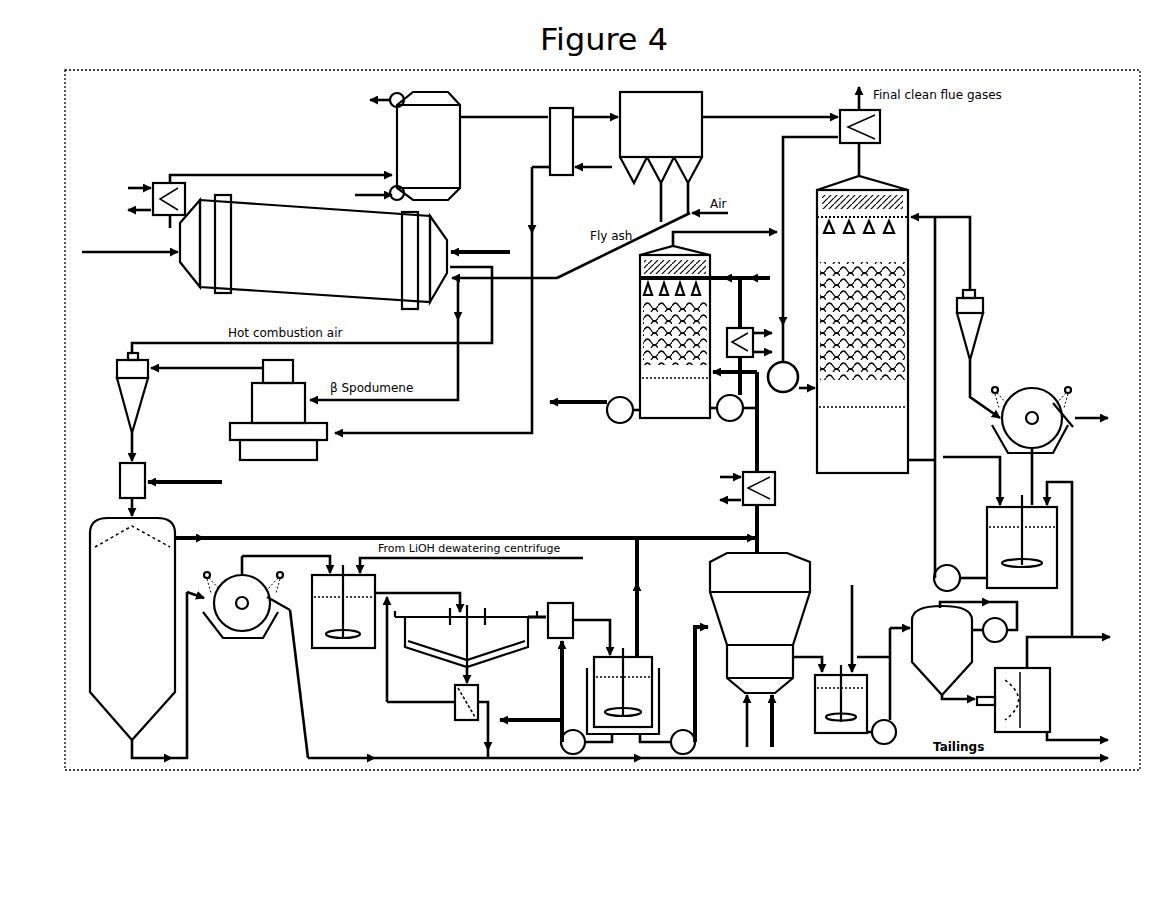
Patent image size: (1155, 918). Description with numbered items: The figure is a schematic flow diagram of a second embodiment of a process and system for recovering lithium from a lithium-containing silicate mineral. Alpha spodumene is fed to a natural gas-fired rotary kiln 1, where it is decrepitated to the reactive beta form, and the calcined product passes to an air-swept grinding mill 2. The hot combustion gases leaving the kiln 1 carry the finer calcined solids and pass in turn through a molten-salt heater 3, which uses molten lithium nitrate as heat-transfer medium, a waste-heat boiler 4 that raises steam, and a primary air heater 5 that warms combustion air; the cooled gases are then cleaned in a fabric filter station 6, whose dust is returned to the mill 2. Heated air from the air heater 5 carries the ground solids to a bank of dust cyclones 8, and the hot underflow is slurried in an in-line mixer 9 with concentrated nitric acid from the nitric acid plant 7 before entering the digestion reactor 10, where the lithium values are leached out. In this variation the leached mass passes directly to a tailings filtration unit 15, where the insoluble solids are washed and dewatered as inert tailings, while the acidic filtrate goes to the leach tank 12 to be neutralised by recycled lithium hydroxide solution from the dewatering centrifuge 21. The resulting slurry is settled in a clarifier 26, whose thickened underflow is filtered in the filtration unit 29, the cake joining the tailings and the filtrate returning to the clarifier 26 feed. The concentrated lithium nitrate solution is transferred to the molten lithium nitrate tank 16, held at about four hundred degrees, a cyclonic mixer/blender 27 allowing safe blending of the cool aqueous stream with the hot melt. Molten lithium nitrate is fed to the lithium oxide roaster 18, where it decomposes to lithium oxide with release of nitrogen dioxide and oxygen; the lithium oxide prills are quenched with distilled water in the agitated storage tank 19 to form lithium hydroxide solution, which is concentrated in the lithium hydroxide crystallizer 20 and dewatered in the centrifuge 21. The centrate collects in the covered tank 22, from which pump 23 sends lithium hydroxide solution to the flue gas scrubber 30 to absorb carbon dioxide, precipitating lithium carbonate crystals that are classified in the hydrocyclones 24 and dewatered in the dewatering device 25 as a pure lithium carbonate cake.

The rotary kiln 1 is at (294, 252).
The grinding mill 2 is at (278, 410).
The molten-salt heater 3 is at (245, 179).
The waste-heat boiler 4 is at (430, 145).
The primary air heater 5 is at (550, 125).
The fabric filter station 6 is at (729, 137).
The nitric acid plant 7 is at (697, 392).
The dust cyclones 8 is at (190, 393).
The in-line mixer 9 is at (149, 473).
The digestion reactor 10 is at (422, 638).
The leach tank 12 is at (308, 650).
The tailings filtration unit 15 is at (247, 657).
The molten LiNO3 tank 16 is at (604, 646).
The lithium oxide roaster 18 is at (760, 623).
The agitated storage tank 19 is at (814, 660).
The lithium hydroxide crystallizer 20 is at (953, 666).
The centrifuge 21 is at (1051, 696).
The covered tank 22 is at (1033, 562).
The pump 23 is at (960, 556).
The hydrocyclones 24 is at (988, 334).
The dewatering device 25 is at (1061, 424).
The clarifier 26 is at (460, 619).
The cyclonic mixer/blender 27 is at (569, 612).
The filtration unit 29 is at (437, 677).
The flue gas scrubber 30 is at (893, 377).